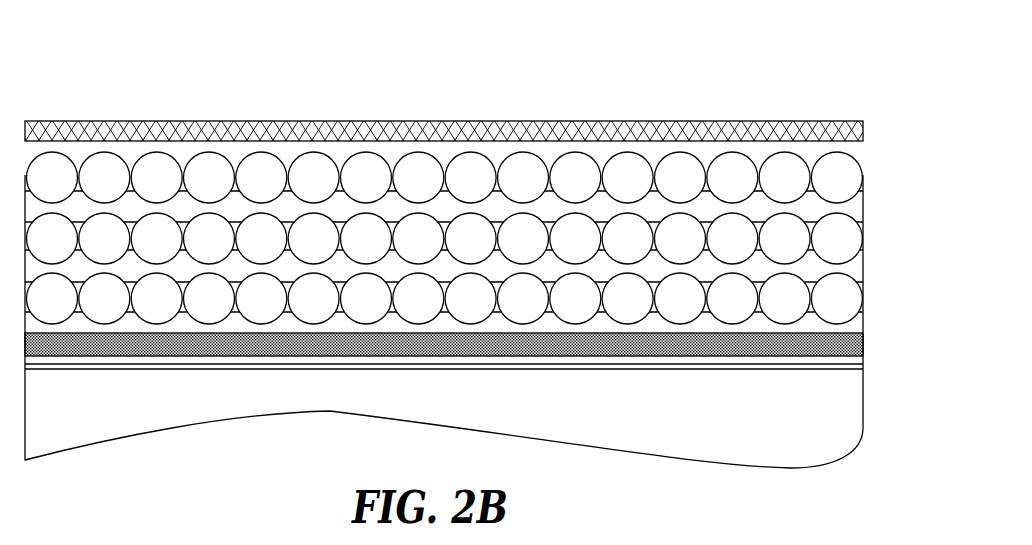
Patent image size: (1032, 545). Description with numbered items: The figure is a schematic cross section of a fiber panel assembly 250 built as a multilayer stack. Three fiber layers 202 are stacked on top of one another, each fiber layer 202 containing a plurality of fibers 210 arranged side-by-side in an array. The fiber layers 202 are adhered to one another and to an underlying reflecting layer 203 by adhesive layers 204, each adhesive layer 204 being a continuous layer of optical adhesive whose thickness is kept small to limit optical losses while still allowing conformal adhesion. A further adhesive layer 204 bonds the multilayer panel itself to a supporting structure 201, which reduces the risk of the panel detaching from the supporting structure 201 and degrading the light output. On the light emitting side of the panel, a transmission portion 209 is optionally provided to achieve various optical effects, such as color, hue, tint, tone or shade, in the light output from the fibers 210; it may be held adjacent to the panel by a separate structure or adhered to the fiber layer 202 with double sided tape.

The fiber panel assembly 250 is at (124, 39).
The transmission portion 209 is at (465, 122).
The fiber layer 202 is at (856, 153).
The adhesive layer 204 is at (855, 206).
The fibers 210 is at (208, 160).
The reflecting layer 203 is at (444, 344).
The supporting structure 201 is at (444, 418).